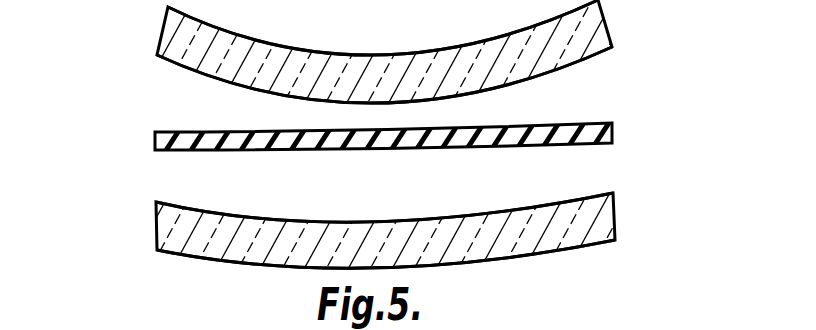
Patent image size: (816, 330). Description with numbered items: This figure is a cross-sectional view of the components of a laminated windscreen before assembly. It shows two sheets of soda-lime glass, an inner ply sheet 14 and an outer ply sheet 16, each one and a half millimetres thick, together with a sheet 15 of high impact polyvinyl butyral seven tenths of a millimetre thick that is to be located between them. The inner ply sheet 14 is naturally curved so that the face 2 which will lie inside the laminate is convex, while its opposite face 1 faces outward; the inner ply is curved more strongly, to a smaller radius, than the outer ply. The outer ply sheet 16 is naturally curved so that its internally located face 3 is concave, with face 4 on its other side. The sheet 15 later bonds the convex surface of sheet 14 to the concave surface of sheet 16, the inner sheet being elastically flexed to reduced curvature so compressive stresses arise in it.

The face 1 is at (568, 14).
The face 2 is at (557, 68).
The face 3 is at (560, 203).
The face 4 is at (570, 247).
The inner ply sheet 14 is at (172, 34).
The polyvinyl butyral sheet 15 is at (170, 141).
The outer ply sheet 16 is at (192, 232).